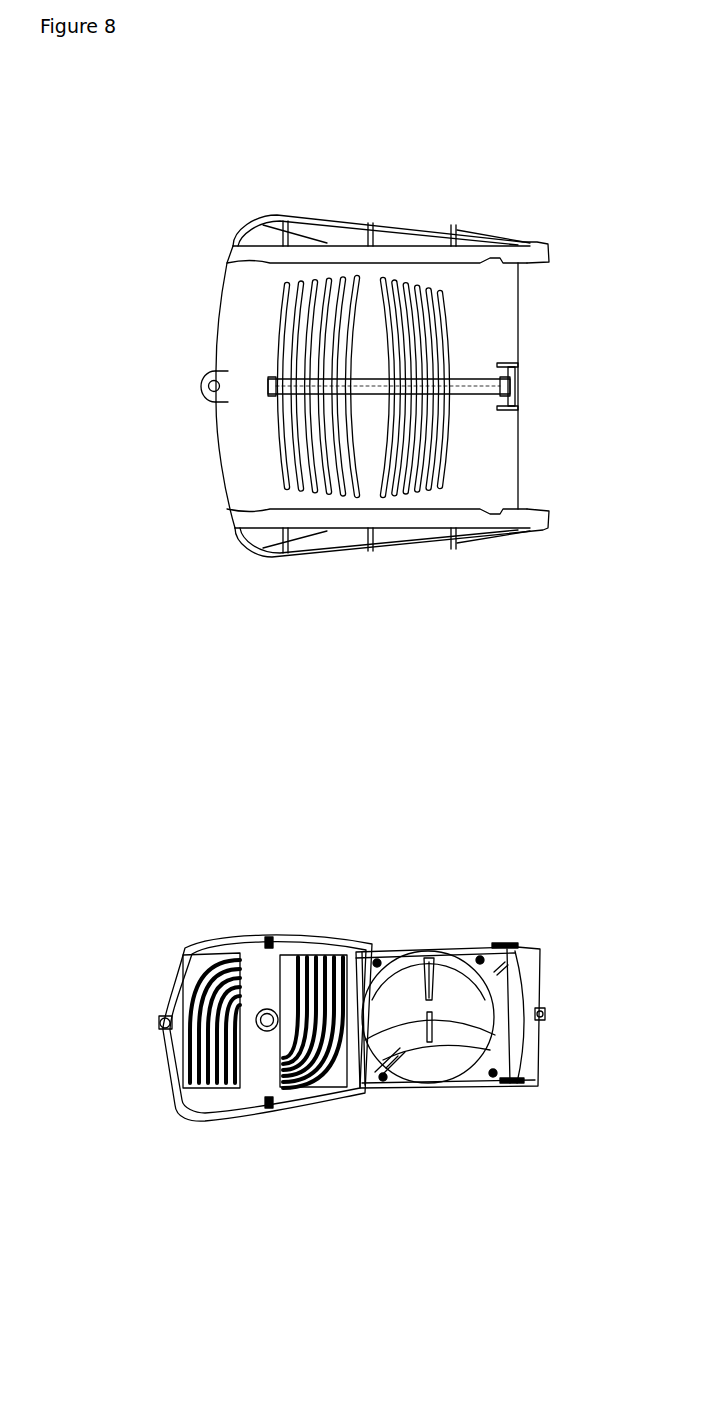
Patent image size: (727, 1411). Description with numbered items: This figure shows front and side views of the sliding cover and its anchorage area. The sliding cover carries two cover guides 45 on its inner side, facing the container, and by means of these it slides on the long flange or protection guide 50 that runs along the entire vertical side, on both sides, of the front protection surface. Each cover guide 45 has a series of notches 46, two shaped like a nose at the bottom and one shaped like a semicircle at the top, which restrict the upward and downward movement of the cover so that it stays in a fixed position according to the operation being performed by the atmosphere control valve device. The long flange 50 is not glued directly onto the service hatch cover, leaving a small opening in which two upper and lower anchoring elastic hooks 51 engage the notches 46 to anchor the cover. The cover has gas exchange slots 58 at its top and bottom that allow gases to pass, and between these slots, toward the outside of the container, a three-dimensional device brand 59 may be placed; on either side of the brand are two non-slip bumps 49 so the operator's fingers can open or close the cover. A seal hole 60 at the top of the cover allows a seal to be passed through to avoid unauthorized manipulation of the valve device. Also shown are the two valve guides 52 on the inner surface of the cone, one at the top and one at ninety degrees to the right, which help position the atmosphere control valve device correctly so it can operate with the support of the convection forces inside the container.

The cover guide 45 is at (420, 512).
The notches 46 is at (518, 250).
The non-slip bumps 49 is at (275, 1097).
The long flange or protection guide 50 is at (490, 958).
The upper and lower anchoring elastic hooks 51 is at (542, 1012).
The valve guides 52 is at (369, 1040).
The gas exchange slots 58 is at (305, 947).
The device brand 59 is at (282, 1035).
The seal hole 60 is at (163, 1020).